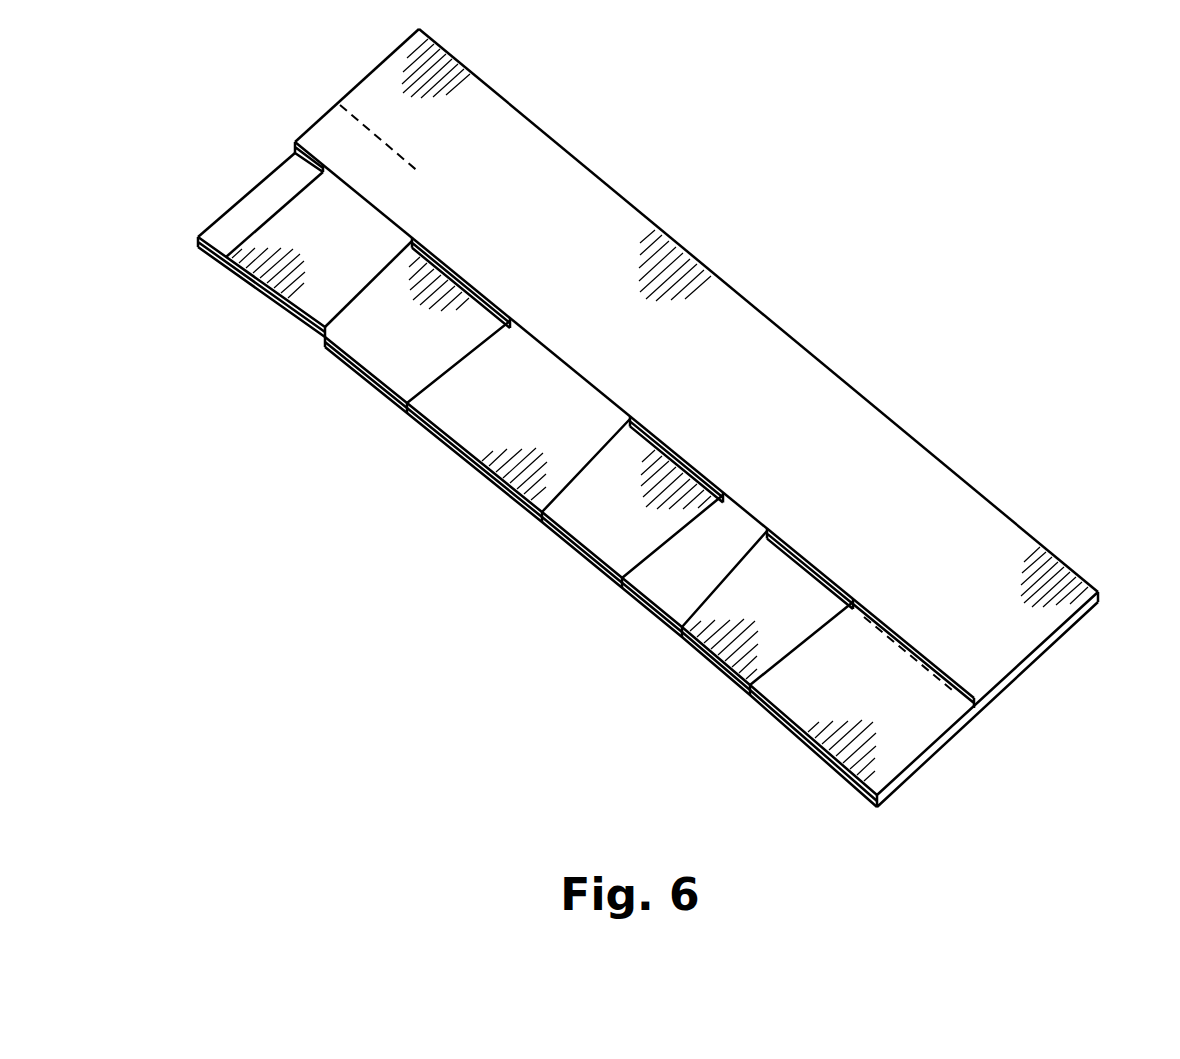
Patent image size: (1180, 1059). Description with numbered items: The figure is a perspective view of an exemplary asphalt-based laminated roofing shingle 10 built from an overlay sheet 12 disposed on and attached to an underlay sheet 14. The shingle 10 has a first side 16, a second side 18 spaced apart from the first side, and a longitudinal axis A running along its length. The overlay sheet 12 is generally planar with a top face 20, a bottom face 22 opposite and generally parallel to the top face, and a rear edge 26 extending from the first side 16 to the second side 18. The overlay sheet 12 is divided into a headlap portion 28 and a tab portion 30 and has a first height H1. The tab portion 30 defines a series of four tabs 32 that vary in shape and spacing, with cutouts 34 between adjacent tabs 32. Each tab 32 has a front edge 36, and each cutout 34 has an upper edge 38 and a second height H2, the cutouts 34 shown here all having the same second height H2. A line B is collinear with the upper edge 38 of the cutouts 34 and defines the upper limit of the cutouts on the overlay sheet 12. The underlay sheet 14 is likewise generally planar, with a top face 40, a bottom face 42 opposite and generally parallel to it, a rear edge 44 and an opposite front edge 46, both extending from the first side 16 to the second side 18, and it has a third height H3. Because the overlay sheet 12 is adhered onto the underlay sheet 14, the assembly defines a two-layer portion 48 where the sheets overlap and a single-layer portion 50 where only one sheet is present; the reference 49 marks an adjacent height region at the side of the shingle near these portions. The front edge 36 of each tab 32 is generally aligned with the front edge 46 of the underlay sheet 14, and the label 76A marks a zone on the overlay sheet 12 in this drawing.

The laminated roofing shingle 10 is at (612, 113).
The overlay sheet 12 is at (1007, 550).
The underlay sheet 14 is at (860, 825).
The first side 16 is at (1034, 683).
The second side 18 is at (252, 146).
The top face 20 is at (527, 170).
The bottom face 22 is at (1057, 640).
The rear edge 26 is at (895, 413).
The headlap portion 28 is at (396, 2).
The tab portion 30 is at (263, 114).
The tabs 32 is at (313, 303).
The cutouts 34 is at (363, 345).
The front edge 36 is at (492, 486).
The upper edge 38 is at (808, 582).
The top face 40 is at (234, 217).
The bottom face 42 is at (209, 253).
The rear edge 44 is at (990, 703).
The front edge 46 is at (573, 553).
The two-layer portion 48 is at (1063, 765).
The end height region 49 is at (1179, 661).
The single-layer portion 50 is at (975, 698).
The shingle zone 76A is at (861, 510).
The longitudinal axis A is at (388, 138).
The line B is at (900, 637).
The first height H1 is at (283, 293).
The second height H2 is at (467, 293).
The third height H3 is at (1023, 742).